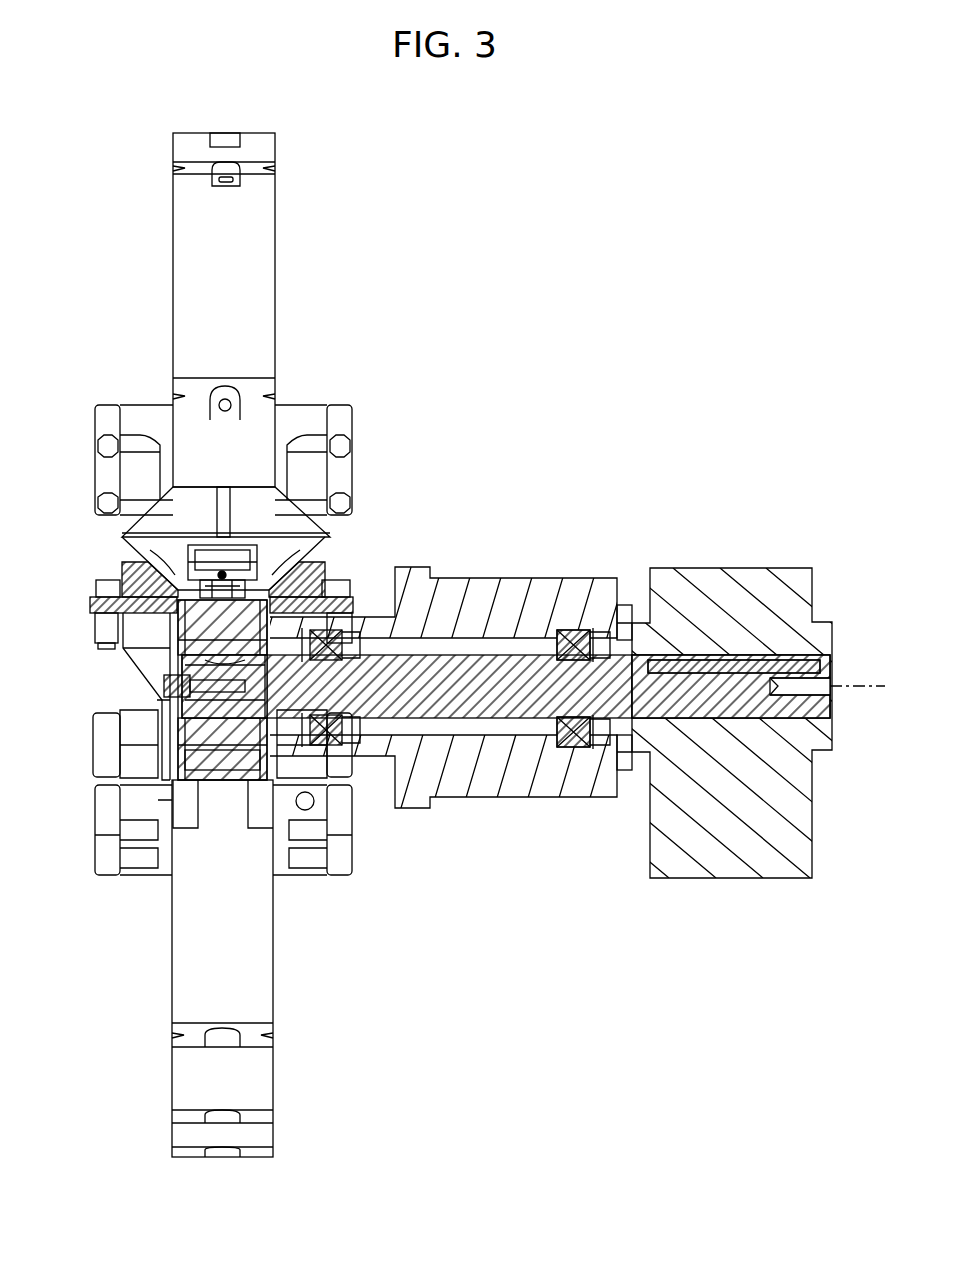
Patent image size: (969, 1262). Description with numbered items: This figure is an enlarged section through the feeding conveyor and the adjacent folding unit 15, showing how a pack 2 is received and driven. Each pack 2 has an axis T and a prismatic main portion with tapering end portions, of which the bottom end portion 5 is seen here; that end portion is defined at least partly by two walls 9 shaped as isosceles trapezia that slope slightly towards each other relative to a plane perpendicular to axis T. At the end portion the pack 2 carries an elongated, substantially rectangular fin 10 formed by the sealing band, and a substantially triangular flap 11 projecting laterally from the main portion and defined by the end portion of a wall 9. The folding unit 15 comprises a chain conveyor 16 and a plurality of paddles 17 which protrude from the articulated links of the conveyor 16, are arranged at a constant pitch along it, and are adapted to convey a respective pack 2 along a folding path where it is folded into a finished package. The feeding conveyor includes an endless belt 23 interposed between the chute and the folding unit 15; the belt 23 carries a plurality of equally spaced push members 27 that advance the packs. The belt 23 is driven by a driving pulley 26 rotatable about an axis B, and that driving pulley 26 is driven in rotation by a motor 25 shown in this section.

The pack 2 is at (322, 542).
The bottom end portion 5 is at (180, 505).
The walls 9 is at (285, 525).
The fin 10 is at (190, 548).
The flap 11 is at (150, 548).
The folding unit 15 is at (353, 292).
The conveyor 16 is at (340, 473).
The paddles 17 is at (182, 247).
The belt 23 is at (115, 600).
The motor 25 is at (730, 575).
The driving pulley 26 is at (212, 740).
The push members 27 is at (115, 627).
The axis T is at (226, 520).
The axis B is at (860, 686).